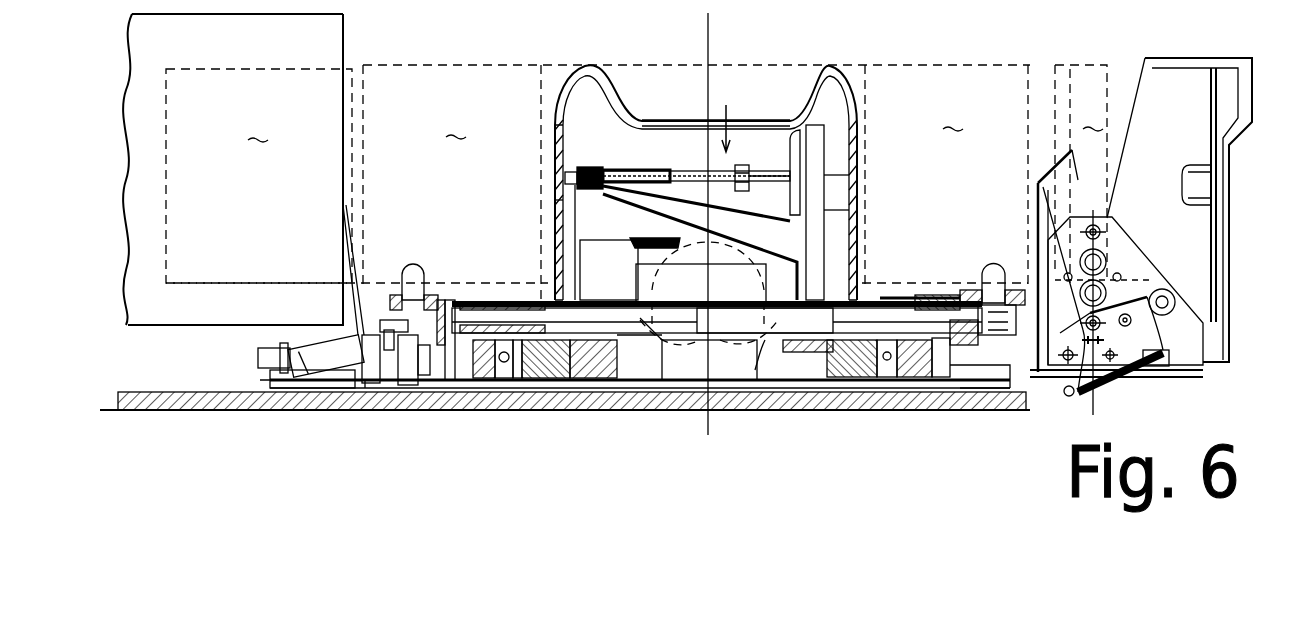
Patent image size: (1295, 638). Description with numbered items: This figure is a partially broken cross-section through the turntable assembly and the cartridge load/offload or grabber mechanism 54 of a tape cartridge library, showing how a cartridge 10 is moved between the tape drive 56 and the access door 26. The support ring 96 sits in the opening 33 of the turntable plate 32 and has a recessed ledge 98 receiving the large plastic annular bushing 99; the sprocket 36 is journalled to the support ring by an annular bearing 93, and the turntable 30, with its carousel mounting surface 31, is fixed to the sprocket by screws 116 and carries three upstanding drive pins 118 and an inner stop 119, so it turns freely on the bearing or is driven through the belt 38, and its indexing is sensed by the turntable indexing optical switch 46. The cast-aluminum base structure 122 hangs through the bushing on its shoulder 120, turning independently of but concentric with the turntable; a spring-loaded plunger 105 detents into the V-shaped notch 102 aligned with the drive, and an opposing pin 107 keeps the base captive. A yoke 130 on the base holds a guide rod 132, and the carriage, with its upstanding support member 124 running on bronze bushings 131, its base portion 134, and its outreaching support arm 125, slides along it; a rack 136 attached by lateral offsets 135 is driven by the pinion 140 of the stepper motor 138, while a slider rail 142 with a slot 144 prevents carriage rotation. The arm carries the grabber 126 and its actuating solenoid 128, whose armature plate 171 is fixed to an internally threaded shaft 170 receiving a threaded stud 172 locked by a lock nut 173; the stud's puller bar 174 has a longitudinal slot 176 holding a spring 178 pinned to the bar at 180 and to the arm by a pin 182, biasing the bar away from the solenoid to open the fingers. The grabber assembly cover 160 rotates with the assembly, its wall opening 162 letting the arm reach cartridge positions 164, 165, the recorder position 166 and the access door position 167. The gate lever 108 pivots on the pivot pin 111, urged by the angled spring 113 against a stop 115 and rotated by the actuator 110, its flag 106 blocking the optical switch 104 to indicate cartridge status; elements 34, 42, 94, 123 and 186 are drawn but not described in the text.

The cartridge 10 is at (676, 121).
The access door 26 is at (1229, 250).
The turntable 30 is at (960, 295).
The carousel mounting surface 31 is at (980, 285).
The turntable plate 32 is at (965, 395).
The opening 33 is at (880, 380).
The lever arm 34 is at (1020, 395).
The sprocket 36 is at (445, 400).
The belt 38 is at (985, 333).
The bracket 42 is at (980, 360).
The turntable indexing optical switch 46 is at (405, 420).
The cartridge load/offload mechanism 54 is at (738, 90).
The tape drive 56 is at (343, 42).
The annular bearing 93 is at (920, 380).
The connector 94 is at (1182, 168).
The support ring 96 is at (850, 377).
The recessed ledge 98 is at (840, 352).
The annular bushing 99 is at (800, 350).
The V-shaped notch 102 is at (535, 380).
The optical switch 104 is at (288, 345).
The spring-loaded plunger 105 is at (585, 380).
The flag 106 is at (300, 370).
The opposing pin 107 is at (760, 380).
The gate lever 108 is at (340, 270).
The actuator 110 is at (338, 342).
The pivot pin 111 is at (395, 320).
The spring 113 is at (372, 392).
The stop 115 is at (330, 392).
The screws 116 is at (930, 390).
The drive pins 118 is at (415, 265).
The stop 119 is at (445, 300).
The shoulder 120 is at (470, 300).
The base structure 122 is at (640, 330).
The support column 123 is at (832, 225).
The upstanding support member 124 is at (824, 140).
The support arm 125 is at (660, 234).
The grabber 126 is at (585, 168).
The actuating solenoid 128 is at (849, 185).
The yoke 130 is at (470, 335).
The bronze bushings 131 is at (915, 295).
The guide rod 132 is at (598, 262).
The base portion 134 is at (880, 296).
The lateral offsets 135 is at (500, 380).
The rack 136 is at (742, 364).
The stepper motor 138 is at (698, 345).
The pinion 140 is at (714, 252).
The slider rail 142 is at (565, 290).
The slot 144 is at (755, 245).
The grabber assembly cover 160 is at (838, 68).
The opening 162 is at (556, 165).
The cartridge position 164 is at (455, 66).
The cartridge position 165 is at (915, 66).
The recorder position 166 is at (220, 70).
The access door position 167 is at (1082, 66).
The internally threaded shaft 170 is at (745, 165).
The armature plate 171 is at (806, 120).
The threaded stud 172 is at (792, 130).
The lock nut 173 is at (745, 195).
The puller bar 174 is at (700, 170).
The longitudinal slot 176 is at (660, 108).
The spring 178 is at (630, 122).
The pin point 180 is at (700, 195).
The pin 182 is at (592, 210).
The opening 186 is at (560, 200).